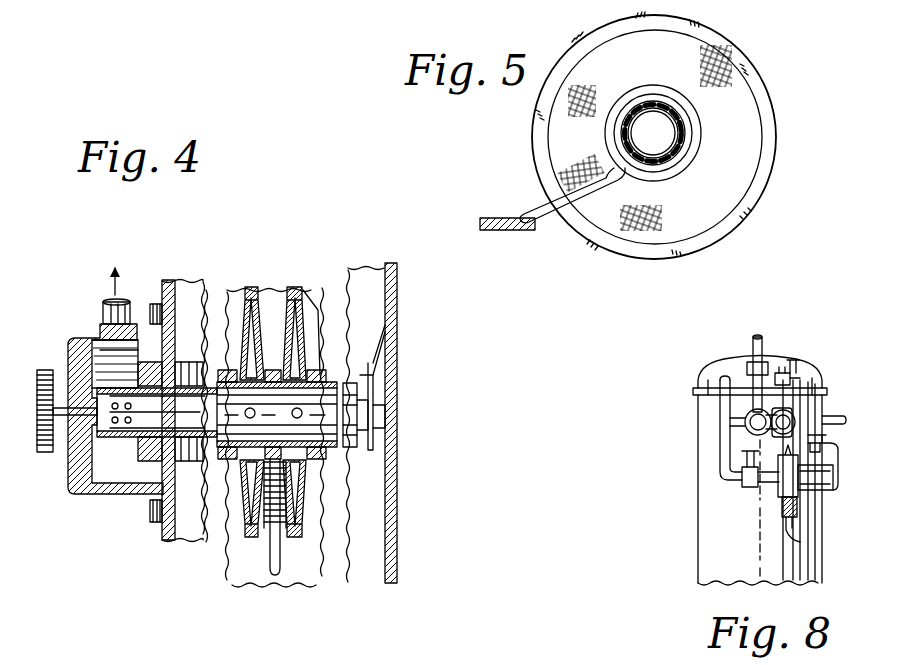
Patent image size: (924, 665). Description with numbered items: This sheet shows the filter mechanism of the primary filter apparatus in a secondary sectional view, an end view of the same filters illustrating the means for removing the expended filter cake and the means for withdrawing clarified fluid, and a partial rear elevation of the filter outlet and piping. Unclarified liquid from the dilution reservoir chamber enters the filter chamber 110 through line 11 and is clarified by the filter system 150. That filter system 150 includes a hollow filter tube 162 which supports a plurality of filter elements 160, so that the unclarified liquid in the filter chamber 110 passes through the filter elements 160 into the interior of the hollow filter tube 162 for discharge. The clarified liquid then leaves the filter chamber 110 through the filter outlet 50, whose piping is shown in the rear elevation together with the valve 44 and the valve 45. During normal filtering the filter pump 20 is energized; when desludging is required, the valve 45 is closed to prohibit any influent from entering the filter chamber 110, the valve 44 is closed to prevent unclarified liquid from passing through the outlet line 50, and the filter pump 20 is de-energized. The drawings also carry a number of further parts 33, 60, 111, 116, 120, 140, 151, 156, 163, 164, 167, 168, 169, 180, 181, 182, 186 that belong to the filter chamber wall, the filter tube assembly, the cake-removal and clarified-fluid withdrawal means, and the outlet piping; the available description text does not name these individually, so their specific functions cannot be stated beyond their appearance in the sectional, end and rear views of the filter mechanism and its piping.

In FIG. 8, the line 11 is at (706, 369).
In FIG. 8, the filter pump 20 is at (800, 520).
In FIG. 8, the fitting 33 is at (800, 372).
In FIG. 8, the valve 44 is at (748, 360).
In FIG. 8, the valve 45 is at (788, 362).
In FIG. 8, the filter outlet 50 is at (762, 340).
In FIG. 8, the pipe 60 is at (736, 436).
In FIG. 4, the filter chamber 110 is at (168, 286).
In FIG. 8, the filter chamber 110 is at (698, 543).
In FIG. 8, the tank top 111 is at (816, 374).
In FIG. 4, the drive gear 116 is at (45, 455).
In FIG. 8, the outlet pipe 120 is at (846, 424).
In FIG. 8, the valve 140 is at (792, 416).
In FIG. 4, the filter system 150 is at (208, 258).
In FIG. 4, the bracket 151 is at (378, 382).
In FIG. 4, the housing 156 is at (102, 345).
In FIG. 4, the filter elements 160 is at (266, 300).
In FIG. 4, the hollow filter tube 162 is at (360, 378).
In FIG. 5, the hollow filter tube 162 is at (678, 162).
In FIG. 4, the shaft 163 is at (262, 430).
In FIG. 4, the brush holder 164 is at (262, 300).
In FIG. 5, the brush holder 164 is at (690, 143).
In FIG. 4, the brush 167 is at (320, 346).
In FIG. 4, the cylinder 168 is at (228, 300).
In FIG. 5, the cylinder 168 is at (740, 95).
In FIG. 4, the drum 169 is at (324, 298).
In FIG. 5, the drum 169 is at (720, 28).
In FIG. 4, the cleaning assembly 180 is at (252, 558).
In FIG. 5, the cleaning assembly 180 is at (538, 220).
In FIG. 4, the rod 181 is at (280, 581).
In FIG. 5, the rod 181 is at (654, 86).
In FIG. 4, the brush 182 is at (282, 540).
In FIG. 5, the brush 182 is at (584, 176).
In FIG. 5, the foot 186 is at (503, 218).